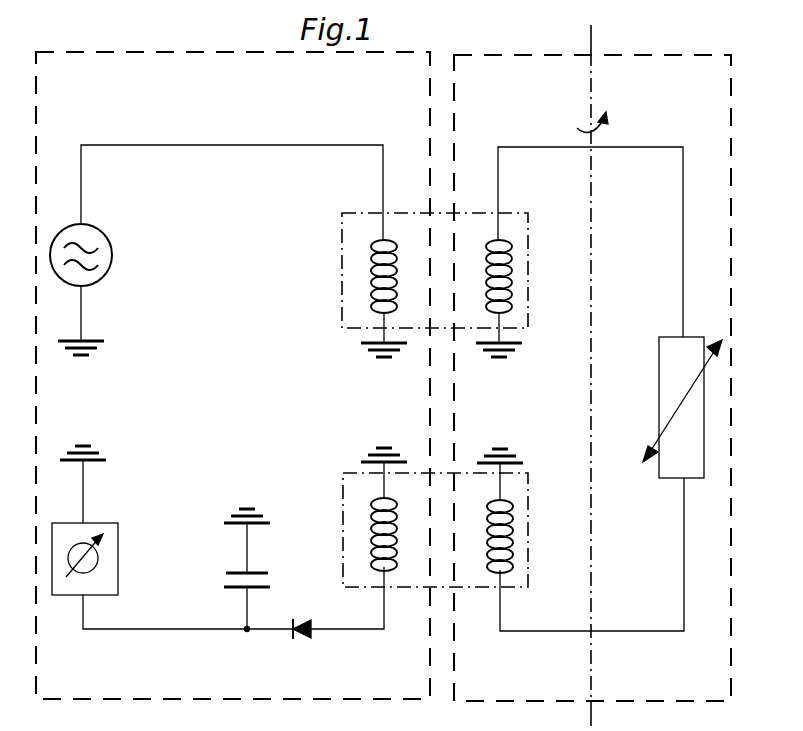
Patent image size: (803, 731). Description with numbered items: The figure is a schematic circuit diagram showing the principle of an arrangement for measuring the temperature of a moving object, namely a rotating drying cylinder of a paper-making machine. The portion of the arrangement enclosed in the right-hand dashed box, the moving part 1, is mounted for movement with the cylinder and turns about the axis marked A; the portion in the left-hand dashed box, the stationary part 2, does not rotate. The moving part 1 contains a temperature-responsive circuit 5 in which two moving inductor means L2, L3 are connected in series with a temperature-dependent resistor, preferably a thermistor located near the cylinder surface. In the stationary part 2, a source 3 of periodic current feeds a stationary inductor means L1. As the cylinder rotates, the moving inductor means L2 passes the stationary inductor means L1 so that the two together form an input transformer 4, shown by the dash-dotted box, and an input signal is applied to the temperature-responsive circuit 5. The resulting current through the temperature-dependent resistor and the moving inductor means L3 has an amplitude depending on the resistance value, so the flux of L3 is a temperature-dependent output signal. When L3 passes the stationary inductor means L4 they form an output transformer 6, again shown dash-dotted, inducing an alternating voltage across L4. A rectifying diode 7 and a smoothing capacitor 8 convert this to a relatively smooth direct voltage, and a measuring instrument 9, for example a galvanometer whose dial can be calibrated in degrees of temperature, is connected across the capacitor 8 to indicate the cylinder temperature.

The moving part of the arrangement 1 is at (616, 82).
The stationary part of the arrangement 2 is at (92, 90).
The source of periodic current 3 is at (70, 223).
The input transformer 4 is at (513, 213).
The temperature-responsive circuit 5 is at (645, 246).
The output transformer 6 is at (395, 590).
The rectifying diode 7 is at (298, 638).
The smoothing capacitor 8 is at (247, 573).
The measuring instrument 9 is at (73, 522).
The stationary inductor means L1 is at (372, 268).
The moving inductor means L2 is at (512, 272).
The moving inductor means L3 is at (512, 538).
The stationary inductor means L4 is at (373, 528).